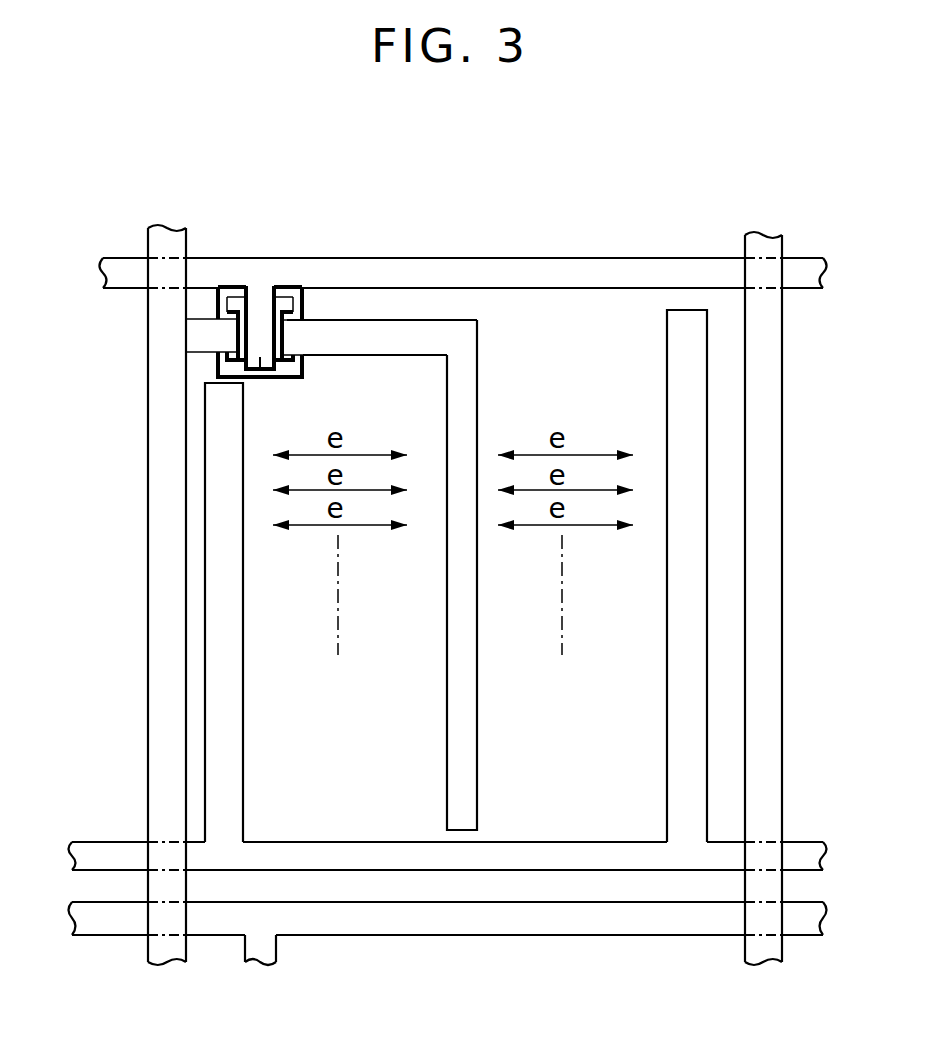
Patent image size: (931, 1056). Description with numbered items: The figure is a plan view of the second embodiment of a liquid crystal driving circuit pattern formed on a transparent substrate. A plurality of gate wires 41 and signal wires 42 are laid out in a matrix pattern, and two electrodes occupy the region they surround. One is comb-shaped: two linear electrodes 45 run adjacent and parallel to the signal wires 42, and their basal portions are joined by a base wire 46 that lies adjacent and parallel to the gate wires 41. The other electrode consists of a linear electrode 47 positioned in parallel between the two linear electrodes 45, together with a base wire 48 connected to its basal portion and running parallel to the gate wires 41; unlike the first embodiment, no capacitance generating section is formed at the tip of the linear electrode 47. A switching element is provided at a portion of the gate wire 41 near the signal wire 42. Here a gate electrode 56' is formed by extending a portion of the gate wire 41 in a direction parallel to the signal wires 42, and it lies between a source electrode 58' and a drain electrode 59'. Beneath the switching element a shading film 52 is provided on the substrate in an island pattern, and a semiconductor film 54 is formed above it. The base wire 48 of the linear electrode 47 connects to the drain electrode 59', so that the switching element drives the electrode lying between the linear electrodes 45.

The gate wire 41 is at (540, 272).
The signal wire 42 is at (150, 608).
The linear electrode 45 is at (245, 745).
The base wire 46 is at (305, 850).
The linear electrode 47 is at (463, 703).
The base wire 48 is at (432, 338).
The shading film 52 is at (228, 296).
The semiconductor film 54 is at (303, 358).
The gate electrode 56' is at (167, 368).
The source electrode 58' is at (140, 335).
The drain electrode 59' is at (326, 271).